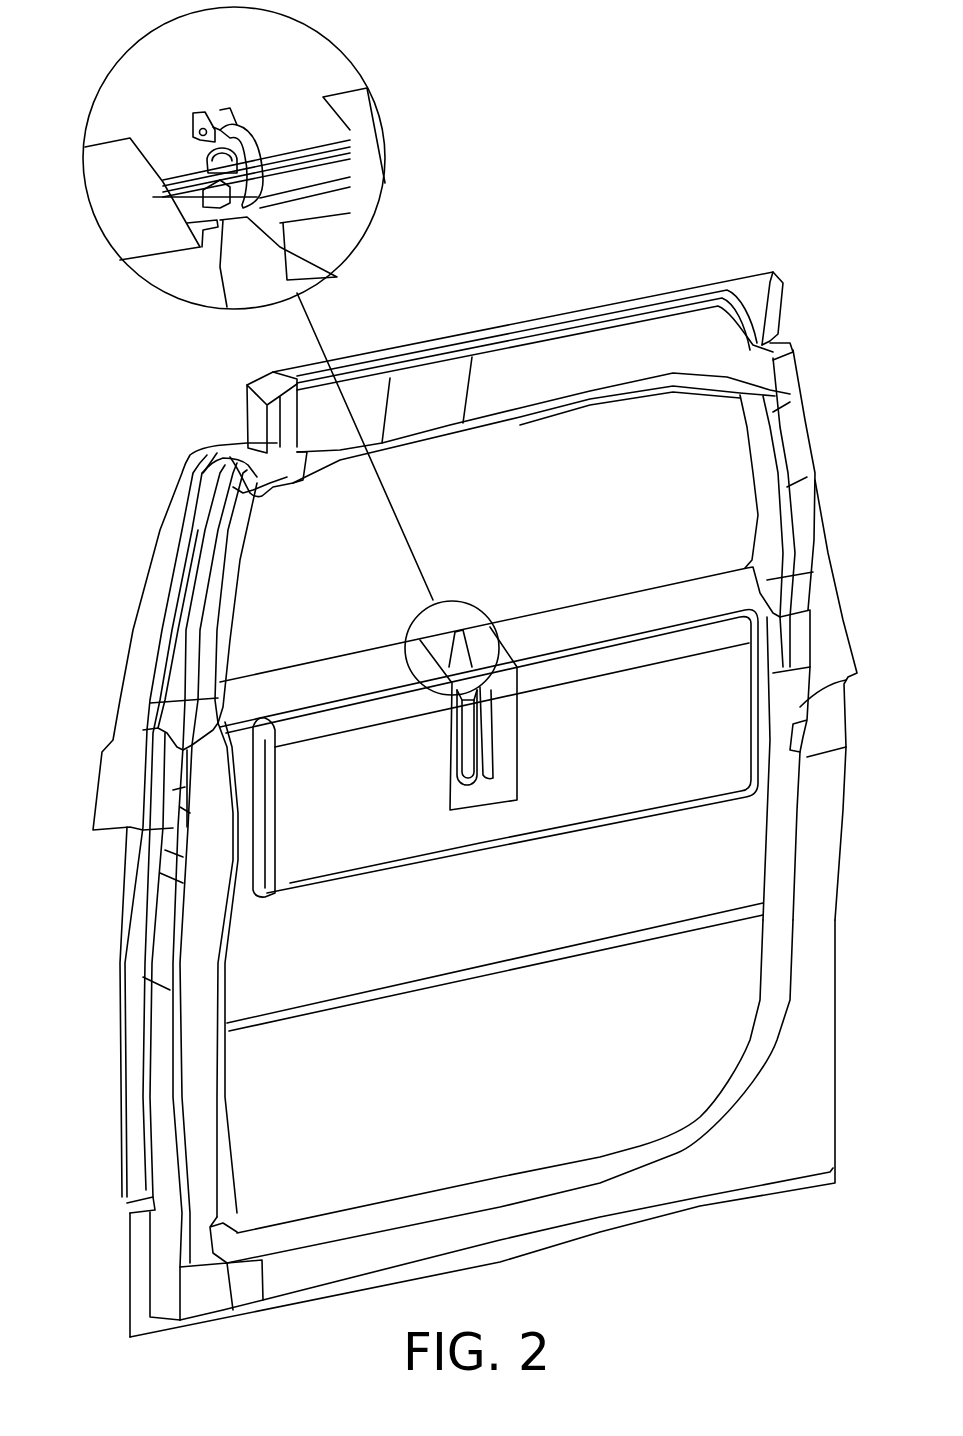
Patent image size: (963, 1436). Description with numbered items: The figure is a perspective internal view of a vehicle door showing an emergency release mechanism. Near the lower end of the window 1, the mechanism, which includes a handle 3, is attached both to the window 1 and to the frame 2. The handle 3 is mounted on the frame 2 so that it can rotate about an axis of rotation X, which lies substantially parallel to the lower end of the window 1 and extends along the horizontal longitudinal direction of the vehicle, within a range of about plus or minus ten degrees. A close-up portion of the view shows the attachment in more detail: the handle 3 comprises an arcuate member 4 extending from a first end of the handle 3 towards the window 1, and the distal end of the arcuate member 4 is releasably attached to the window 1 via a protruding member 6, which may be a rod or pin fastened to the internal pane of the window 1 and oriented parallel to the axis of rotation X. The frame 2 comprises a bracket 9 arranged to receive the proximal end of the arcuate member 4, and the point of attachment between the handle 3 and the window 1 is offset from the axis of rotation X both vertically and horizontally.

The window 1 is at (318, 562).
The frame 2 is at (793, 452).
The handle 3 is at (483, 743).
The arcuate member 4 is at (247, 147).
The protruding member 6 is at (193, 132).
The bracket 9 is at (200, 167).
The axis of rotation X is at (148, 197).